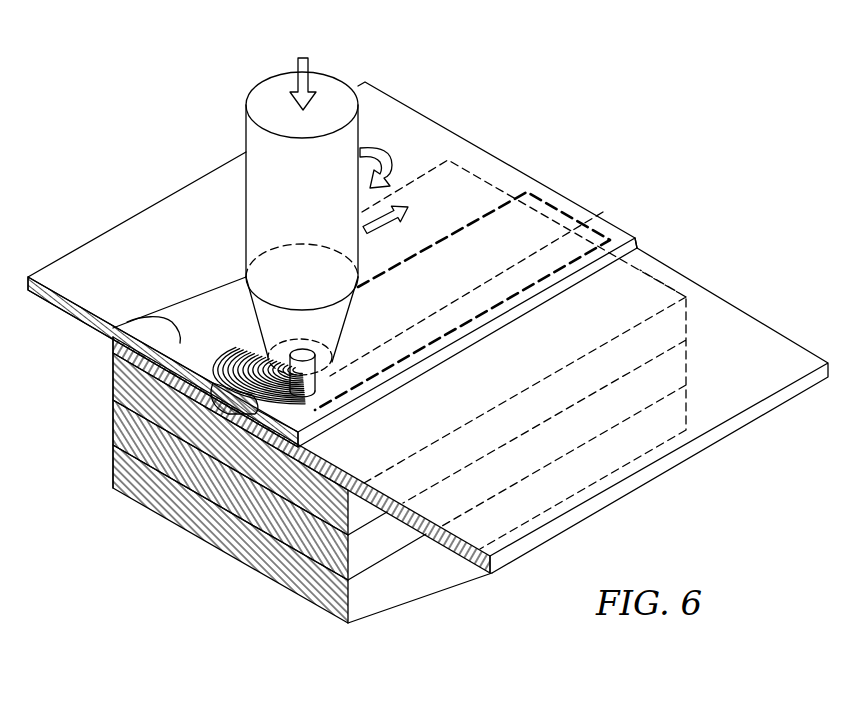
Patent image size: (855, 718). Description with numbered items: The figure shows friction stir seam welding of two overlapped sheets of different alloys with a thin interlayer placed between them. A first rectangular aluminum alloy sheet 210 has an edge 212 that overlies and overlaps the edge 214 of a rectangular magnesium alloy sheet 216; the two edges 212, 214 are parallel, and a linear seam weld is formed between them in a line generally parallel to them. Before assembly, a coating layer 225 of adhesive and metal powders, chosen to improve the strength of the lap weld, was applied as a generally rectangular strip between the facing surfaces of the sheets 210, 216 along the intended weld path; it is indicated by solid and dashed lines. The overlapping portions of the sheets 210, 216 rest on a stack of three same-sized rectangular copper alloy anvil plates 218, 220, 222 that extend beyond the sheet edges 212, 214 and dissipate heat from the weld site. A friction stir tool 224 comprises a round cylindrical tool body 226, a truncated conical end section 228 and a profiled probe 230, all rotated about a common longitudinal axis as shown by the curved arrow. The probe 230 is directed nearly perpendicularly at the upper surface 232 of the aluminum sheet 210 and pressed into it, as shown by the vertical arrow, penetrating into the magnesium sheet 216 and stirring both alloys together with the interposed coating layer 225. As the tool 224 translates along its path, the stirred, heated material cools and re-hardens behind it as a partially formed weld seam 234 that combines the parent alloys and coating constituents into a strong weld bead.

The first rectangular aluminum alloy sheet 210 is at (332, 264).
The edge 212 is at (624, 256).
The edge 214 is at (113, 366).
The rectangular magnesium alloy sheet 216 is at (659, 410).
The copper alloy anvil plate 218 is at (113, 390).
The copper alloy anvil plate 220 is at (113, 422).
The copper alloy anvil plate 222 is at (113, 470).
The friction stir tool 224 is at (343, 80).
The coating layer 225 is at (603, 212).
The round cylindrical tool body 226 is at (302, 287).
The truncated conical end section 228 is at (330, 345).
The profiled probe 230 is at (328, 375).
The upper surface 232 is at (113, 328).
The weld seam 234 is at (240, 357).